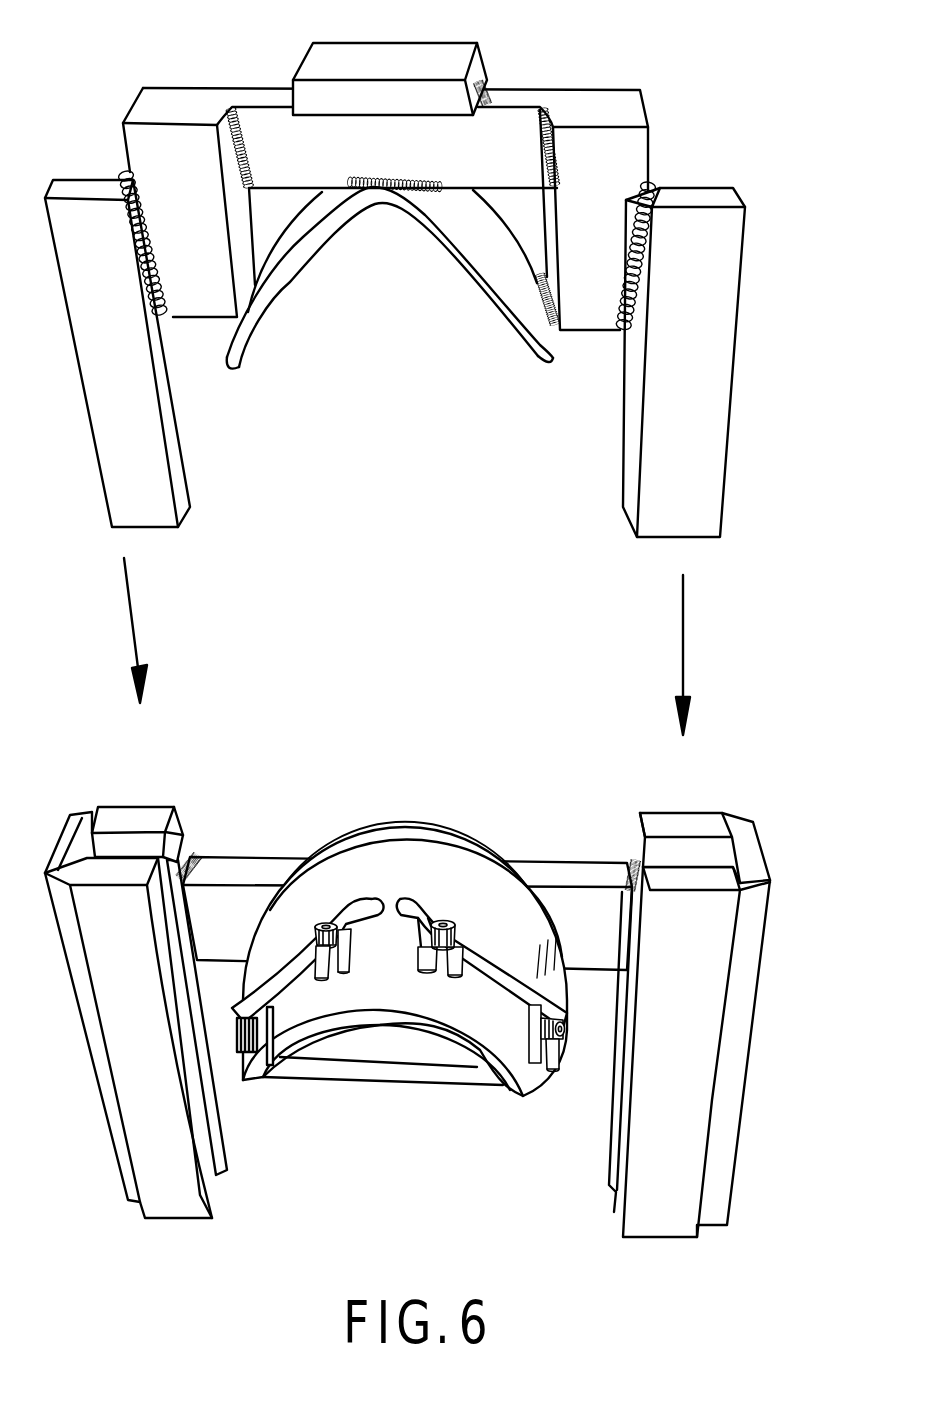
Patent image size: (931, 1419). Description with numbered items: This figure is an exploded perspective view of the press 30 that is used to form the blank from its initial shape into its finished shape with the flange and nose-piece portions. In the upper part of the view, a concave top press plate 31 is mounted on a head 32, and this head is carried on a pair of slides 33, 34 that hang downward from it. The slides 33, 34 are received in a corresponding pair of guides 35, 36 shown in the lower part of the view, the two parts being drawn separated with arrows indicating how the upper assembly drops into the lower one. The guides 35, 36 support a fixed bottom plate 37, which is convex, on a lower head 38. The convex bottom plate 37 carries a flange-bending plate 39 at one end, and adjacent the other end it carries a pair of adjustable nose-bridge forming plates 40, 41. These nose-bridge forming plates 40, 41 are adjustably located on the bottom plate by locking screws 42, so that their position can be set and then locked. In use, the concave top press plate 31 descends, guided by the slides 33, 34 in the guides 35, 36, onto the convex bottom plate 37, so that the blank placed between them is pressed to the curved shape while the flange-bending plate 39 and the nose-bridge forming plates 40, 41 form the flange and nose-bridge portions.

The press 30 is at (712, 118).
The concave top press plate 31 is at (468, 305).
The head 32 is at (540, 97).
The slide 33 is at (177, 465).
The slide 34 is at (728, 462).
The guide 35 is at (127, 813).
The guide 36 is at (747, 860).
The fixed bottom plate 37 is at (468, 888).
The head 38 is at (583, 866).
The flange-bending plate 39 is at (385, 832).
The adjustable nose-bridge forming plate 40 is at (298, 978).
The adjustable nose-bridge forming plate 41 is at (499, 978).
The locking screw 42 is at (439, 960).